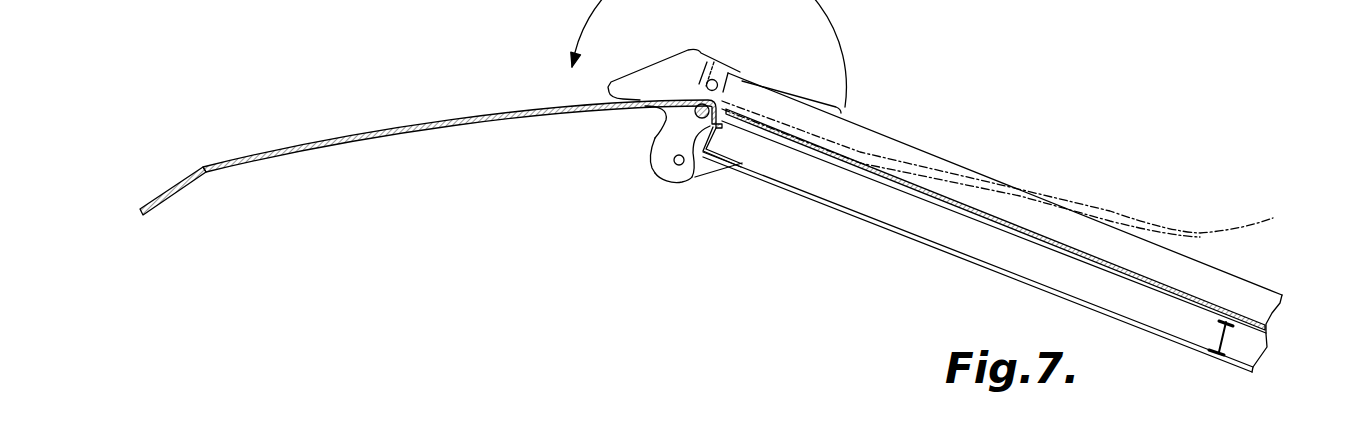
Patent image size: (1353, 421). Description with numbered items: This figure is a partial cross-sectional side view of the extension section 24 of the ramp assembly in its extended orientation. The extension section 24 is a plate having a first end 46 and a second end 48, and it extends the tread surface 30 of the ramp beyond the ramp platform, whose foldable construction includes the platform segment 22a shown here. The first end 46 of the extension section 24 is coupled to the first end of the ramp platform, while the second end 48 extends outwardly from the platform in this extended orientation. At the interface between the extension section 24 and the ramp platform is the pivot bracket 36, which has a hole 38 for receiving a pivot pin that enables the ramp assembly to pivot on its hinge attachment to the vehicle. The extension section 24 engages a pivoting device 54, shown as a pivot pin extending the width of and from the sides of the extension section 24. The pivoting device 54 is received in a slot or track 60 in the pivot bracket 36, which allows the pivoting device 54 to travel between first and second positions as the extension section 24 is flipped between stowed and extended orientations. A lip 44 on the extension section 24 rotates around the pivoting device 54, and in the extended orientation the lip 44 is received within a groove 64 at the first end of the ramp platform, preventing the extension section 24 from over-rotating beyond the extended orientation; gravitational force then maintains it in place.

The platform segment 22a is at (937, 157).
The extension section 24 is at (413, 120).
The tread surface 30 is at (1205, 298).
The pivot bracket 36 is at (650, 172).
The hole 38 is at (650, 178).
The lip 44 is at (697, 178).
The first end 46 is at (655, 137).
The second end 48 is at (180, 183).
The pivoting device 54 is at (682, 97).
The track 60 is at (718, 84).
The groove 64 is at (710, 125).